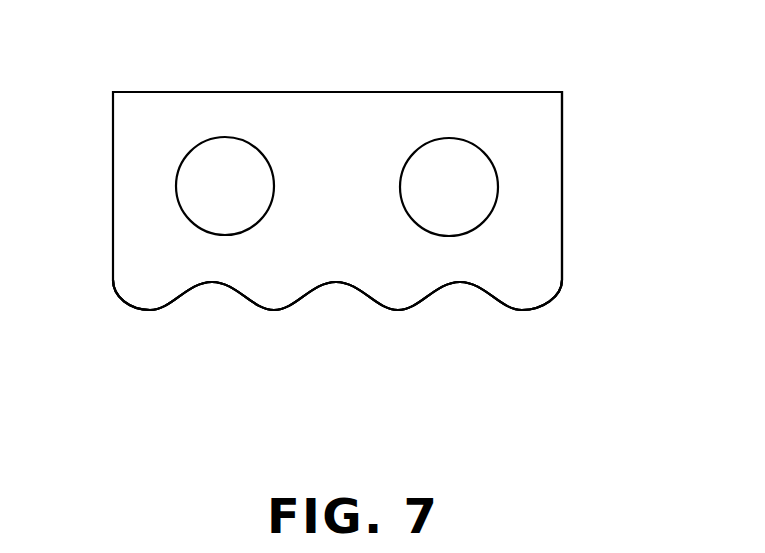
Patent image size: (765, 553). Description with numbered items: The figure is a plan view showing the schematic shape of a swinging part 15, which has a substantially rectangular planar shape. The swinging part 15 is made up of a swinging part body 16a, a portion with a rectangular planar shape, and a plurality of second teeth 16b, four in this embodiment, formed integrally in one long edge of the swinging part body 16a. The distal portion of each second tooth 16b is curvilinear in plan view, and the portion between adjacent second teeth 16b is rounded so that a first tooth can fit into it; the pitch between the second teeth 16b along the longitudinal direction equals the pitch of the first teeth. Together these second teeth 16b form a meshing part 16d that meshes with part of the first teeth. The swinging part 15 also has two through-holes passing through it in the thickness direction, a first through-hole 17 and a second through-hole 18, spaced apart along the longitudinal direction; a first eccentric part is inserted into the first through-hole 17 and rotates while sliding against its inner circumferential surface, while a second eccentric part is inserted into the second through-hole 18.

The swinging part 15 is at (496, 87).
The swinging part body 16a is at (518, 233).
The second teeth 16b is at (150, 312).
The meshing part 16d is at (560, 352).
The first through-hole 17 is at (487, 156).
The second through-hole 18 is at (187, 155).